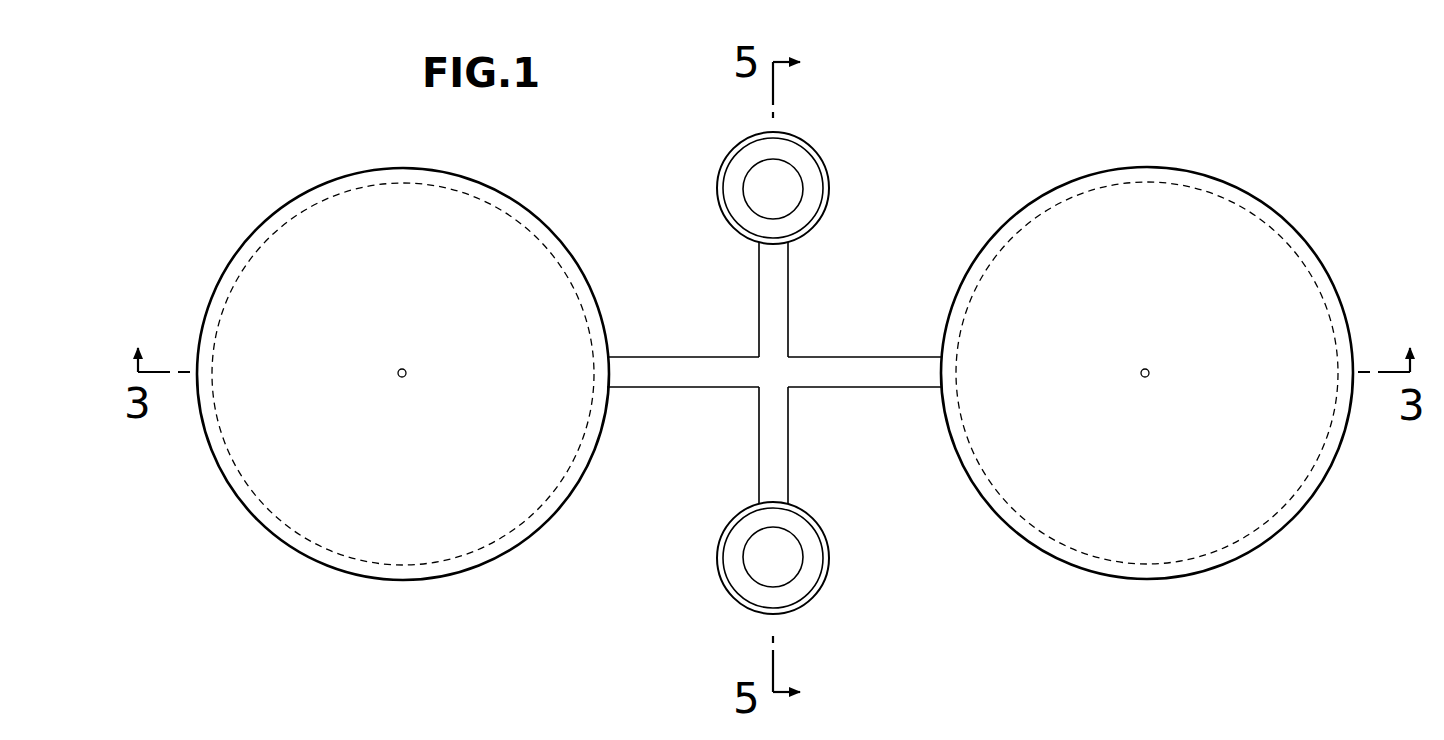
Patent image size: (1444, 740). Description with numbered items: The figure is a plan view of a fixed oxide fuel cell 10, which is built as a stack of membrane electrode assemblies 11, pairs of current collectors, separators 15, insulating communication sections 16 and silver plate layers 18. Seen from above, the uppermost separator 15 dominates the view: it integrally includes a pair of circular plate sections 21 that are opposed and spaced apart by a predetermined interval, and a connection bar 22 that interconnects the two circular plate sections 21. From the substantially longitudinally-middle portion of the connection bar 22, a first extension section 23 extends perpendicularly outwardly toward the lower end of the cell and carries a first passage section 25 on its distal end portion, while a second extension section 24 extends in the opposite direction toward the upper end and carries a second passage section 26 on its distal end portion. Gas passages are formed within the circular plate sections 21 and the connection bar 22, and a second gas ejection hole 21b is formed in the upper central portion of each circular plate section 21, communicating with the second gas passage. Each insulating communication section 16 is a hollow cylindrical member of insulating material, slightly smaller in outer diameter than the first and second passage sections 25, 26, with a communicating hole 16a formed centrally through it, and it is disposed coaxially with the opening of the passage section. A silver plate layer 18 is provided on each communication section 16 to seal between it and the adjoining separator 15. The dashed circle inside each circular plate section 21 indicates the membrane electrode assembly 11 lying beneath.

The fixed oxide fuel cell 10 is at (1068, 98).
The membrane electrode assembly 11 is at (292, 219).
The separator 15 is at (1236, 188).
The insulating communication section 16 is at (797, 156).
The communicating hole 16a is at (779, 209).
The silver plate layer 18 is at (810, 187).
The circular plate section 21 is at (386, 546).
The second gas ejection hole 21b is at (406, 371).
The connection bar 22 is at (702, 372).
The first extension section 23 is at (768, 452).
The second extension section 24 is at (777, 283).
The first passage section 25 is at (719, 576).
The second passage section 26 is at (717, 186).